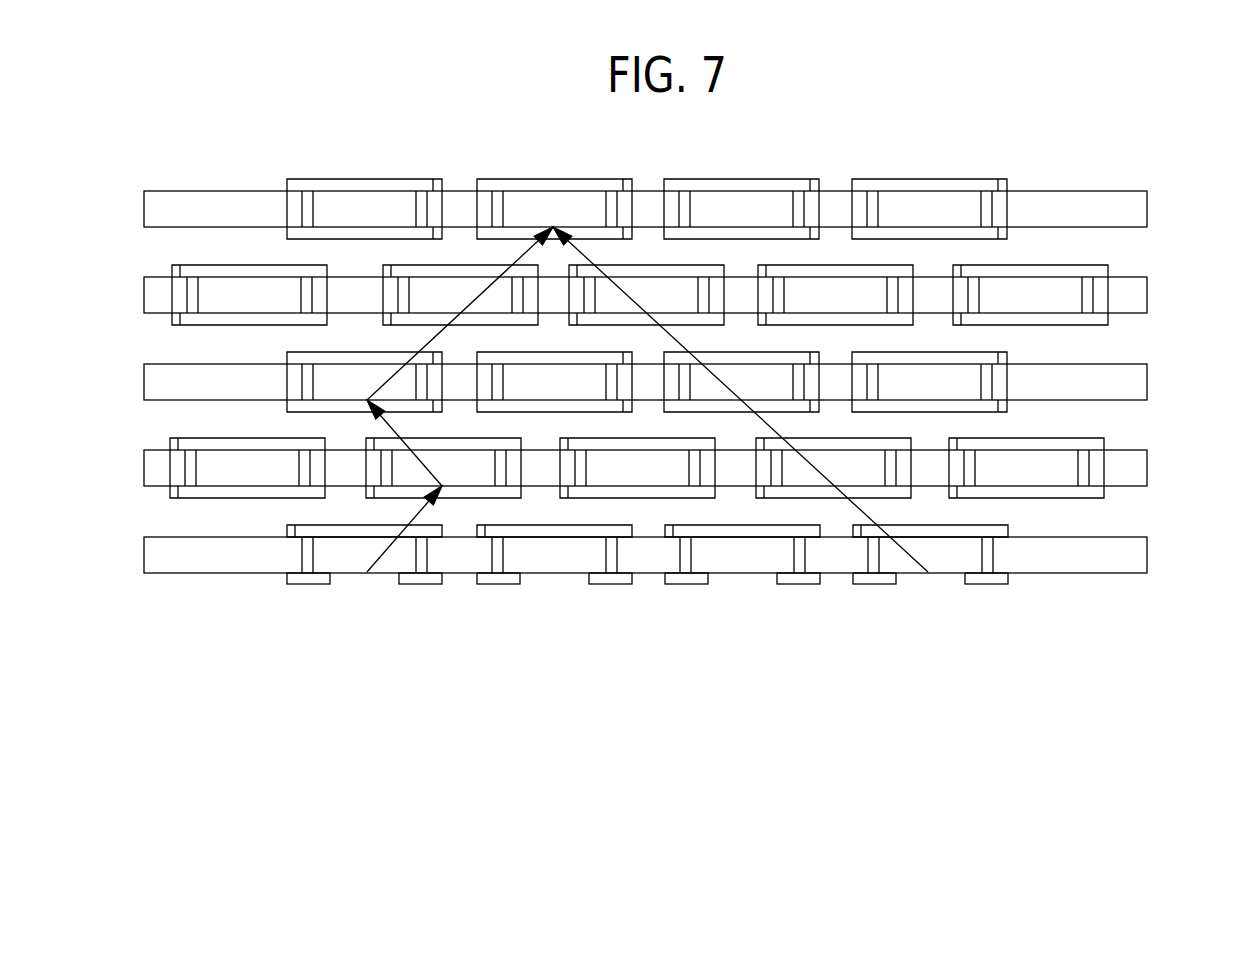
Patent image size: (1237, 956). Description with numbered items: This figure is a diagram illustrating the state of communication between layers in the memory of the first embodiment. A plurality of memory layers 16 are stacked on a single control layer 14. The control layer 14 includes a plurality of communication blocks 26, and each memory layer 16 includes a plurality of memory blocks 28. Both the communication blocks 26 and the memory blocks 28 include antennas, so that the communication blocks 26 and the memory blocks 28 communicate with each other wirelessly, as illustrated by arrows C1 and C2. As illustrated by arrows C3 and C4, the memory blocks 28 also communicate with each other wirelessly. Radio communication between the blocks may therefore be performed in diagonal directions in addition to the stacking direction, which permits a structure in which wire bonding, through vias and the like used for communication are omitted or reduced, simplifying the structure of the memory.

The control layer 14 is at (1168, 555).
The memory layer 16 is at (1168, 208).
The communication block 26 is at (373, 573).
The memory block 28 is at (942, 190).
The arrow C1 is at (370, 572).
The arrow C2 is at (913, 570).
The arrow C3 is at (388, 432).
The arrow C4 is at (523, 252).